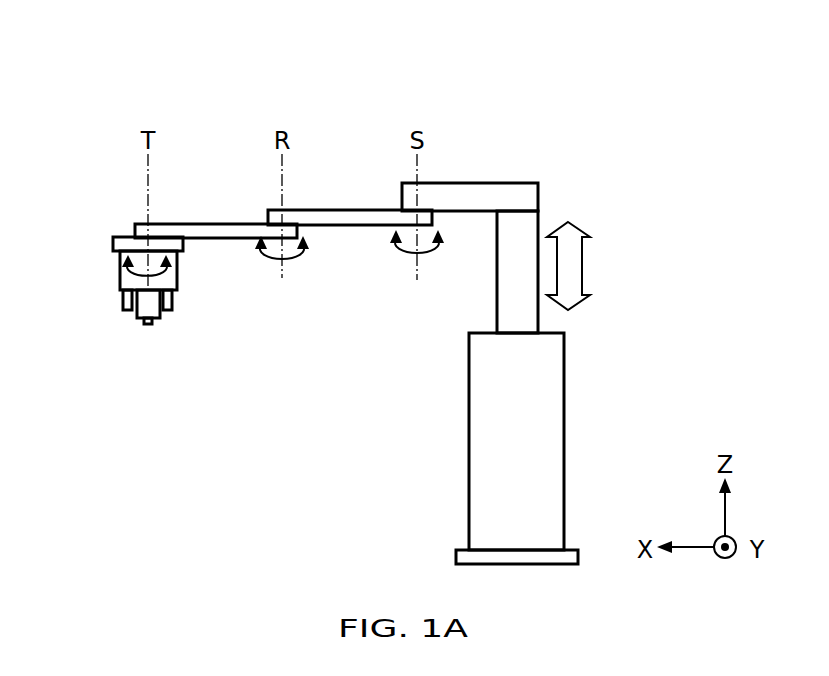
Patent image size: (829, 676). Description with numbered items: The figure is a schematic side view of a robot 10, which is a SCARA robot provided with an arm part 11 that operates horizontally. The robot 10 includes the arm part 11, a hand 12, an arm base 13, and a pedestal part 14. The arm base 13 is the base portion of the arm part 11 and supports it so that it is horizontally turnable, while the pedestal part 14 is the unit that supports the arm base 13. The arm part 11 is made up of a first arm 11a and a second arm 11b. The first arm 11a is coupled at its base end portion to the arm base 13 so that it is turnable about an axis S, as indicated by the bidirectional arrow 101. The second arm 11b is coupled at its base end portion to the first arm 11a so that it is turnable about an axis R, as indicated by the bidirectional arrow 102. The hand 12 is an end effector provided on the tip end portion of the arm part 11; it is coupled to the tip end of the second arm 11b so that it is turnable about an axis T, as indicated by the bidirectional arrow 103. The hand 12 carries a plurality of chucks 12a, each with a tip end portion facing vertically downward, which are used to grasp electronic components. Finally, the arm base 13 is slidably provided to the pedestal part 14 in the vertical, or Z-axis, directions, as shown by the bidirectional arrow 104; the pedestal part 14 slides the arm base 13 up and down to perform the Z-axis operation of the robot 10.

The robot 10 is at (138, 59).
The arm part 11 is at (353, 82).
The first arm 11a is at (316, 210).
The second arm 11b is at (207, 223).
The hand 12 is at (103, 264).
The chucks 12a is at (130, 326).
The arm base 13 is at (524, 170).
The pedestal part 14 is at (564, 437).
The bidirectional arrow 101 is at (430, 250).
The bidirectional arrow 102 is at (293, 256).
The bidirectional arrow 103 is at (168, 266).
The bidirectional arrow 104 is at (583, 262).